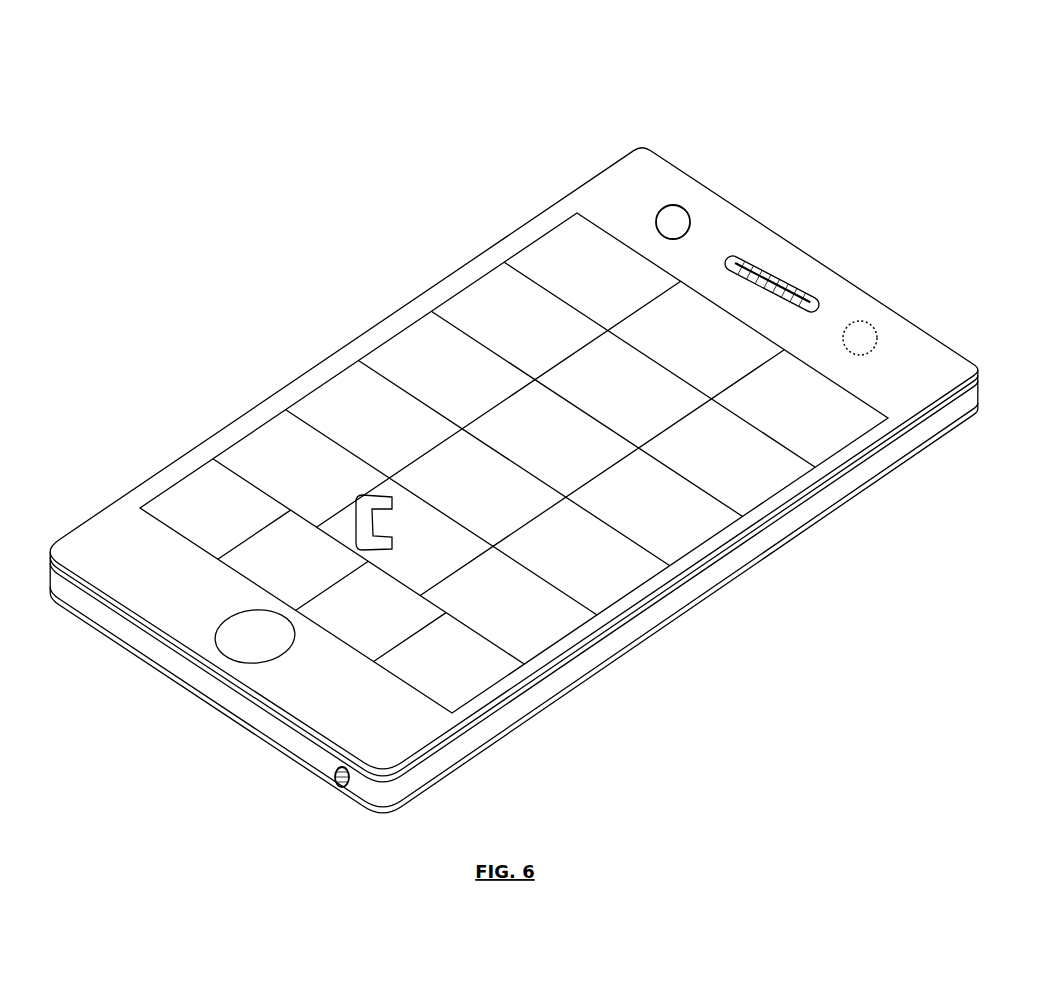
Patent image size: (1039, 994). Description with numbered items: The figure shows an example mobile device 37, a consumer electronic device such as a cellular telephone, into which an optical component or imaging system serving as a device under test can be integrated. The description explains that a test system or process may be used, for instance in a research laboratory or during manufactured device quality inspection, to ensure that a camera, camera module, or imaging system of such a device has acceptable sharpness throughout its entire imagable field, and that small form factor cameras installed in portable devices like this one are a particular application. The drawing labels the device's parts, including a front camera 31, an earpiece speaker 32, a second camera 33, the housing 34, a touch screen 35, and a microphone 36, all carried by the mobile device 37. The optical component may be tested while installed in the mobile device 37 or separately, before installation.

The camera 31 is at (658, 208).
The earpiece speaker 32 is at (781, 275).
The camera 33 is at (895, 308).
The housing 34 is at (810, 512).
The touch screen 35 is at (625, 583).
The microphone 36 is at (336, 780).
The mobile device 37 is at (891, 142).